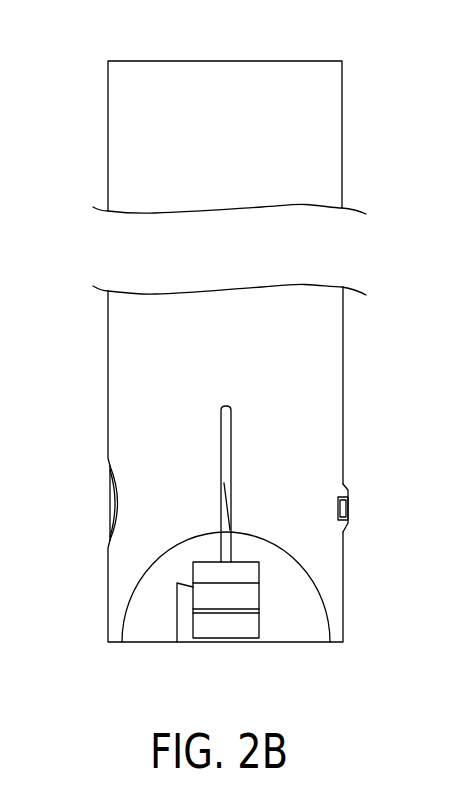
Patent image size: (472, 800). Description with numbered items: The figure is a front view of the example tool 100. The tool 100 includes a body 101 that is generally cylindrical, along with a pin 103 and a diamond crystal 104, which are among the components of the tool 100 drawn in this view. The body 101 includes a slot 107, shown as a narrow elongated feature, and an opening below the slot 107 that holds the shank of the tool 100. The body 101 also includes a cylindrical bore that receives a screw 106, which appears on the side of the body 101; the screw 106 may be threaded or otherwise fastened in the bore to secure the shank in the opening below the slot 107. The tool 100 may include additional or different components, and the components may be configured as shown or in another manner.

The tool 100 is at (82, 83).
The body 101 is at (108, 382).
The pin 103 is at (237, 625).
The diamond crystal 104 is at (188, 636).
The screw 106 is at (108, 493).
The slot 107 is at (221, 432).